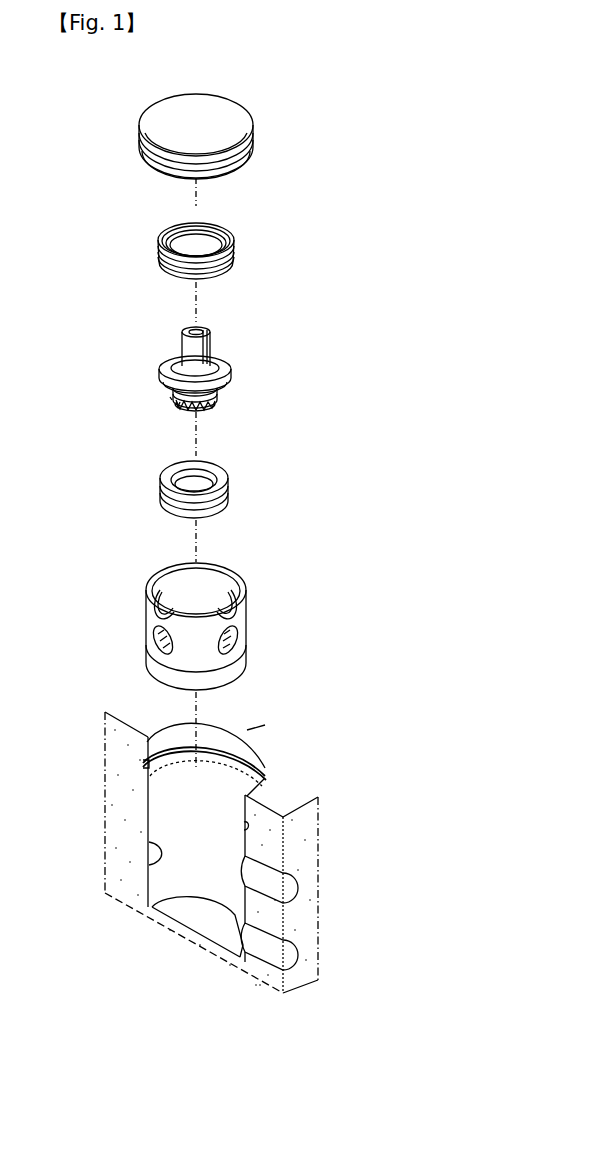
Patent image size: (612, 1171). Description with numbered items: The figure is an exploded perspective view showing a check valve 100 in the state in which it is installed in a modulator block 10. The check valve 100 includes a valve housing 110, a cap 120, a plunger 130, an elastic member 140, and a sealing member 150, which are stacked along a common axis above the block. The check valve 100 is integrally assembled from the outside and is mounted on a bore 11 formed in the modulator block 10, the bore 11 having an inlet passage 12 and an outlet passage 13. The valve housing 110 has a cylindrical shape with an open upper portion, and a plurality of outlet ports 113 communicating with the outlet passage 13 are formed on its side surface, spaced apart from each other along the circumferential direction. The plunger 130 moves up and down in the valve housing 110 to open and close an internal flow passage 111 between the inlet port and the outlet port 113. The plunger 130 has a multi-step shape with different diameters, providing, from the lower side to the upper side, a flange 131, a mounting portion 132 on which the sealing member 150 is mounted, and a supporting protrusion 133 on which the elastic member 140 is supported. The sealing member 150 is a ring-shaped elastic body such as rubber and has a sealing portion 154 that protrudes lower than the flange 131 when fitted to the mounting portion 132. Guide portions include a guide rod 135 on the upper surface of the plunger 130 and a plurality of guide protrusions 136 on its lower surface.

The check valve 100 is at (445, 311).
The cap 120 is at (244, 118).
The elastic member 140 is at (232, 235).
The plunger 130 is at (220, 372).
The guide rod 135 is at (180, 342).
The supporting protrusion 133 is at (230, 378).
The mounting portion 132 is at (218, 397).
The flange 131 is at (215, 405).
The guide protrusions 136 is at (177, 407).
The sealing member 150 is at (228, 486).
The sealing portion 154 is at (227, 508).
The valve housing 110 is at (223, 626).
The internal flow passage 111 is at (201, 594).
The outlet port 113 is at (233, 645).
The modulator block 10 is at (208, 852).
The bore 11 is at (160, 866).
The inlet passage 12 is at (290, 947).
The outlet passage 13 is at (288, 878).